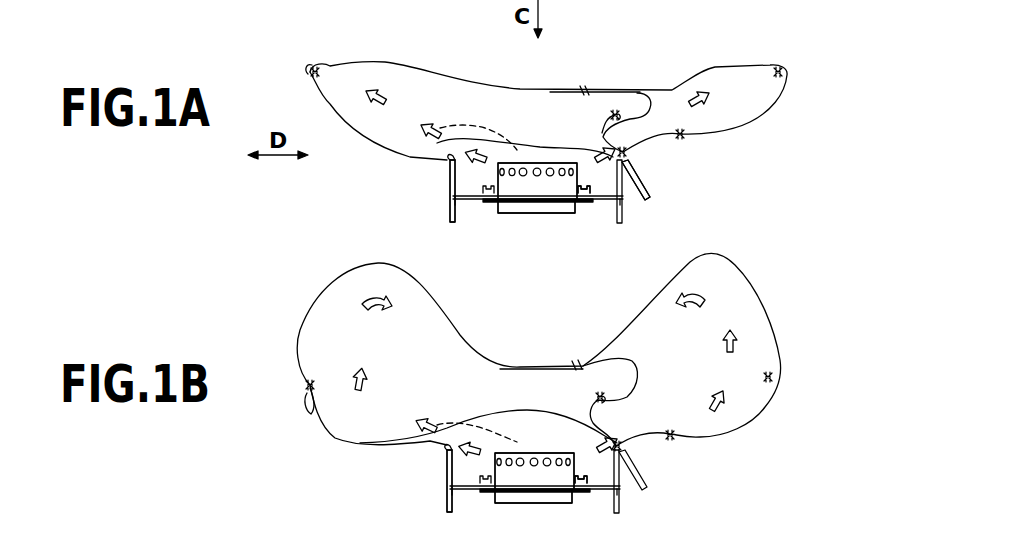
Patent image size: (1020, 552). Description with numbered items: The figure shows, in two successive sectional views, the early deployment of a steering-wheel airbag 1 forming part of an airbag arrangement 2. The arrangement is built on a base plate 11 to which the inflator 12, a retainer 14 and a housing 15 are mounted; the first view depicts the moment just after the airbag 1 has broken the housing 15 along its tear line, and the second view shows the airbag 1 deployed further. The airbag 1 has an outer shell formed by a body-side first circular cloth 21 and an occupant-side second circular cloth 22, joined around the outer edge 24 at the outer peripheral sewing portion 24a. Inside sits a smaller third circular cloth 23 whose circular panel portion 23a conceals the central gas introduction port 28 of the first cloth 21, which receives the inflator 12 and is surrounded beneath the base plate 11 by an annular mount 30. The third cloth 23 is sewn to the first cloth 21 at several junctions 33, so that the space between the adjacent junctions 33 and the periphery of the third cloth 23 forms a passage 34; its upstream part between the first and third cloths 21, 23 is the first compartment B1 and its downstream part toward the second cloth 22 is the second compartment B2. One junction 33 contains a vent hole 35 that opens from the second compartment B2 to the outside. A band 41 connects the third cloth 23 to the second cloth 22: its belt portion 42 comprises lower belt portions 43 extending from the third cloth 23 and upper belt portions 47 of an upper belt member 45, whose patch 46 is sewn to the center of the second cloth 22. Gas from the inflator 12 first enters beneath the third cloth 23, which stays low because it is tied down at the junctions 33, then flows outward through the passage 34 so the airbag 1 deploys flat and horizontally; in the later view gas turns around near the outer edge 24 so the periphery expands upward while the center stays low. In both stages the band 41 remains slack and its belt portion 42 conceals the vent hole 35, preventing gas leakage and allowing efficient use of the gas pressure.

In FIG. 1A, the airbag 1 is at (757, 120).
In FIG. 1B, the airbag 1 is at (743, 423).
In FIG. 1A, the airbag arrangement 2 is at (786, 34).
In FIG. 1B, the airbag arrangement 2 is at (783, 280).
In FIG. 1A, the base plate 11 is at (467, 200).
In FIG. 1B, the base plate 11 is at (466, 490).
In FIG. 1A, the inflator 12 is at (533, 190).
In FIG. 1B, the inflator 12 is at (516, 483).
In FIG. 1A, the retainer 14 is at (491, 184).
In FIG. 1B, the retainer 14 is at (487, 475).
In FIG. 1A, the housing 15 is at (450, 202).
In FIG. 1B, the housing 15 is at (448, 488).
In FIG. 1A, the first circular cloth 21 is at (713, 141).
In FIG. 1B, the first circular cloth 21 is at (717, 437).
In FIG. 1A, the second circular cloth 22 is at (673, 90).
In FIG. 1B, the second circular cloth 22 is at (654, 304).
In FIG. 1A, the third circular cloth 23 is at (622, 193).
In FIG. 1B, the third circular cloth 23 is at (517, 400).
In FIG. 1A, the circular panel portion 23a is at (558, 146).
In FIG. 1A, the outer edge 24 is at (310, 70).
In FIG. 1B, the outer edge 24 is at (306, 385).
In FIG. 1A, the outer peripheral sewing portion 24a is at (316, 79).
In FIG. 1B, the outer peripheral sewing portion 24a is at (310, 400).
In FIG. 1A, the gas introduction port 28 is at (580, 200).
In FIG. 1B, the gas introduction port 28 is at (578, 490).
In FIG. 1A, the annular mount 30 is at (590, 200).
In FIG. 1B, the annular mount 30 is at (590, 490).
In FIG. 1A, the junctions 33 is at (682, 136).
In FIG. 1B, the junctions 33 is at (669, 436).
In FIG. 1A, the passage 34 is at (448, 140).
In FIG. 1B, the passage 34 is at (440, 433).
In FIG. 1A, the vent hole 35 is at (648, 143).
In FIG. 1B, the vent hole 35 is at (650, 443).
In FIG. 1A, the band 41 is at (636, 92).
In FIG. 1B, the band 41 is at (633, 389).
In FIG. 1A, the belt portion 42 is at (630, 118).
In FIG. 1B, the belt portion 42 is at (640, 373).
In FIG. 1A, the lower belt portions 43 is at (662, 137).
In FIG. 1B, the lower belt portions 43 is at (588, 413).
In FIG. 1A, the upper belt member 45 is at (600, 90).
In FIG. 1B, the upper belt member 45 is at (604, 360).
In FIG. 1A, the patch 46 is at (567, 89).
In FIG. 1B, the patch 46 is at (550, 370).
In FIG. 1A, the upper belt portions 47 is at (650, 100).
In FIG. 1B, the upper belt portions 47 is at (632, 352).
In FIG. 1A, the first compartment B1 is at (545, 148).
In FIG. 1B, the first compartment B1 is at (550, 425).
In FIG. 1A, the second compartment B2 is at (460, 90).
In FIG. 1B, the second compartment B2 is at (477, 360).